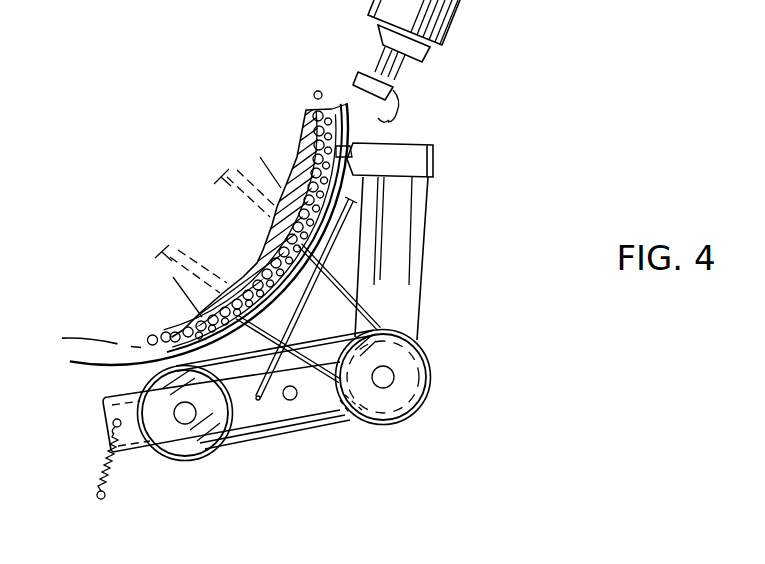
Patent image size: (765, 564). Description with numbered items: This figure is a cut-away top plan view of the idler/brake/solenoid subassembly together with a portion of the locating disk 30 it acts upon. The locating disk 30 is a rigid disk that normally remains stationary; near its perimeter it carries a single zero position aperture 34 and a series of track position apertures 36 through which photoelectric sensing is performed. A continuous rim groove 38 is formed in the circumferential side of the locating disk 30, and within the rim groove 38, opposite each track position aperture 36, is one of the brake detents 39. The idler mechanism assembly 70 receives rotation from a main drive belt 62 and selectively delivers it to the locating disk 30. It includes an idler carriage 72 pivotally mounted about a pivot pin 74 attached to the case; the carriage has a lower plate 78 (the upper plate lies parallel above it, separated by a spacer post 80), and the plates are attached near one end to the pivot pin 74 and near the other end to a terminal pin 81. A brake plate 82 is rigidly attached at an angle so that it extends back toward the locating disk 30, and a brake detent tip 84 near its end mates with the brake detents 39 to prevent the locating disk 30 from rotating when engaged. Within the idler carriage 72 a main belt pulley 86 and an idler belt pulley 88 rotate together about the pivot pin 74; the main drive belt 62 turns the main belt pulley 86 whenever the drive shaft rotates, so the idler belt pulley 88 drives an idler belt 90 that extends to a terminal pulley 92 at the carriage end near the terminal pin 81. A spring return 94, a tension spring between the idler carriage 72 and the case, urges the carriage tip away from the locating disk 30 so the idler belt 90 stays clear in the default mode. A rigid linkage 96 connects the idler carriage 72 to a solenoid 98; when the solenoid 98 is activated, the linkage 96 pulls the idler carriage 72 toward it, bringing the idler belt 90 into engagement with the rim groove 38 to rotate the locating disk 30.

The locating disk 30 is at (110, 289).
The zero position aperture 34 is at (290, 168).
The track position apertures 36 is at (315, 92).
The rim groove 38 is at (270, 308).
The brake detents 39 is at (347, 104).
The main drive belt 62 is at (367, 303).
The idler mechanism assembly 70 is at (466, 316).
The idler carriage 72 is at (447, 409).
The pivot pin 74 is at (388, 384).
The lower plate 78 is at (267, 413).
The spacer post 80 is at (292, 400).
The terminal pin 81 is at (114, 422).
The brake plate 82 is at (402, 235).
The brake detent tip 84 is at (352, 146).
The main belt pulley 86 is at (362, 412).
The idler belt pulley 88 is at (407, 362).
The idler belt 90 is at (166, 338).
The terminal pulley 92 is at (176, 432).
The spring return 94 is at (100, 480).
The linkage 96 is at (322, 267).
The solenoid 98 is at (447, 52).